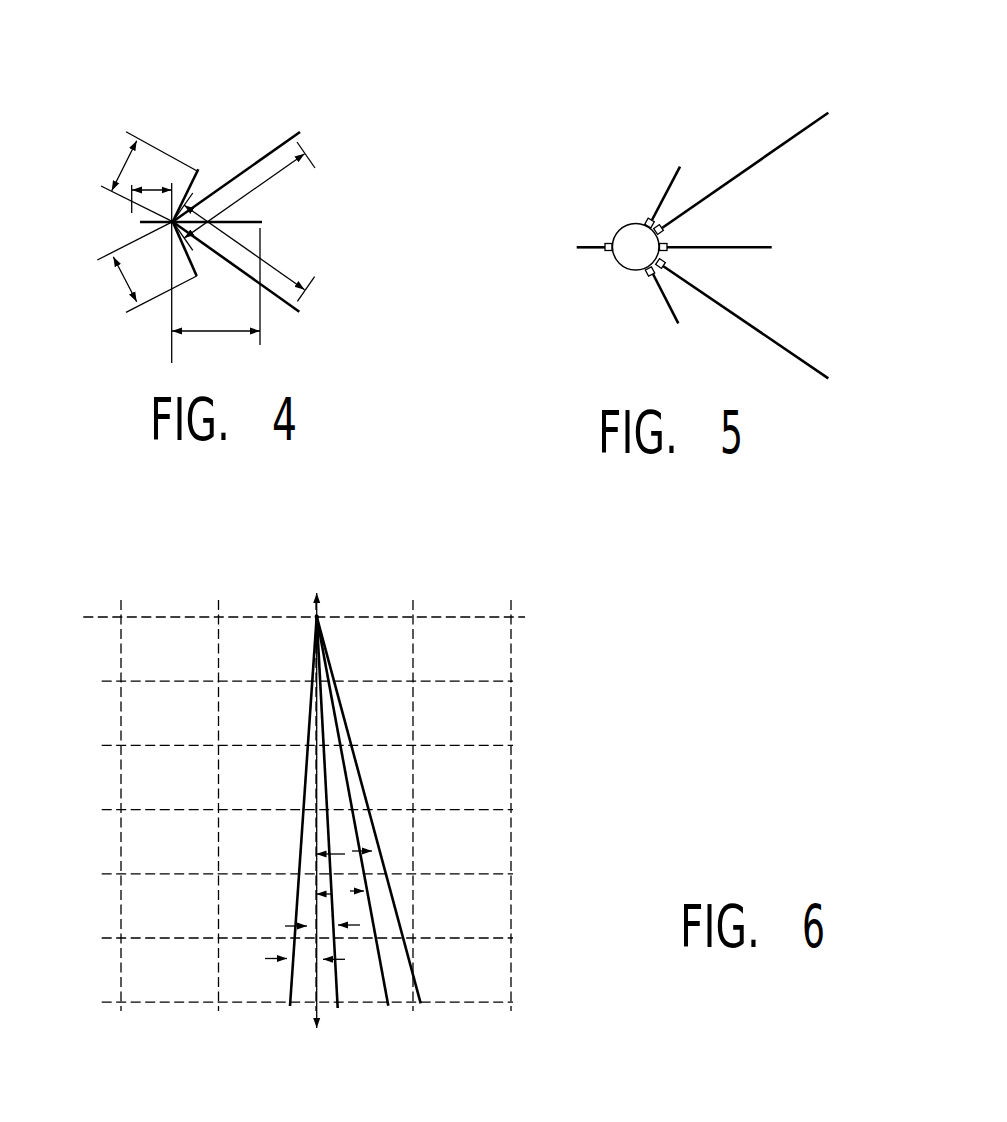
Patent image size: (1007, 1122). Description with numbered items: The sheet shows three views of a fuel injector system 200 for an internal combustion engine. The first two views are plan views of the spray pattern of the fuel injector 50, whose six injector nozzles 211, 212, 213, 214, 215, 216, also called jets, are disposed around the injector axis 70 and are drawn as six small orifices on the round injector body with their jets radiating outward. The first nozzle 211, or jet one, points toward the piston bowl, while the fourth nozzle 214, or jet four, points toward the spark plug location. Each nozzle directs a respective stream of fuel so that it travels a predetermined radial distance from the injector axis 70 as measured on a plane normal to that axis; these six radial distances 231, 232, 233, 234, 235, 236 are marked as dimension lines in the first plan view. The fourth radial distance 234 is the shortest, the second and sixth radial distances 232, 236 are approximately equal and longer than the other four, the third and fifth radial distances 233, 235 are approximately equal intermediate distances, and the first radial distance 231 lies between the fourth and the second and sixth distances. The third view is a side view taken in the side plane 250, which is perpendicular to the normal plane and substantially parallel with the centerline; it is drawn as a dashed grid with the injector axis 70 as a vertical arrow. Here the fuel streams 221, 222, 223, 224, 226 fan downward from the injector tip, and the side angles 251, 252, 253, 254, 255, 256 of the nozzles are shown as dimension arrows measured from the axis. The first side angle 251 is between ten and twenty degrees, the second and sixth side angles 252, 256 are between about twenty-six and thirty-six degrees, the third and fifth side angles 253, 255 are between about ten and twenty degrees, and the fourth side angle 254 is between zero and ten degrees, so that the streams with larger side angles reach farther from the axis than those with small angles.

In FIG. 4, the fuel injector system 200 is at (132, 72).
In FIG. 5, the fuel injector system 200 is at (623, 117).
In FIG. 6, the fuel injector system 200 is at (140, 563).
In FIG. 4, the first radial distance 231 is at (243, 332).
In FIG. 4, the second radial distance 232 is at (273, 178).
In FIG. 4, the third radial distance 233 is at (127, 163).
In FIG. 4, the fourth radial distance 234 is at (156, 190).
In FIG. 4, the fifth radial distance 235 is at (128, 287).
In FIG. 6, the fifth radial distance 235 is at (340, 985).
In FIG. 4, the sixth radial distance 236 is at (273, 263).
In FIG. 5, the fuel injector 50 is at (625, 227).
In FIG. 5, the first nozzle 211 is at (667, 242).
In FIG. 5, the second nozzle 212 is at (662, 225).
In FIG. 5, the third nozzle 213 is at (648, 220).
In FIG. 5, the fourth nozzle 214 is at (608, 243).
In FIG. 5, the fifth nozzle 215 is at (648, 275).
In FIG. 5, the sixth nozzle 216 is at (663, 259).
In FIG. 6, the injector axis 70 is at (317, 612).
In FIG. 6, the side plane 250 is at (511, 710).
In FIG. 6, the first side angle 251 is at (333, 895).
In FIG. 6, the second side angle 252 is at (400, 837).
In FIG. 6, the third side angle 253 is at (259, 905).
In FIG. 6, the fourth side angle 254 is at (300, 960).
In FIG. 6, the fifth side angle 255 is at (323, 927).
In FIG. 6, the sixth side angle 256 is at (358, 851).
In FIG. 6, the first stream 221 is at (387, 983).
In FIG. 6, the second stream 222 is at (443, 828).
In FIG. 6, the third stream 223 is at (316, 847).
In FIG. 6, the fourth stream 224 is at (292, 968).
In FIG. 6, the sixth stream 226 is at (417, 991).